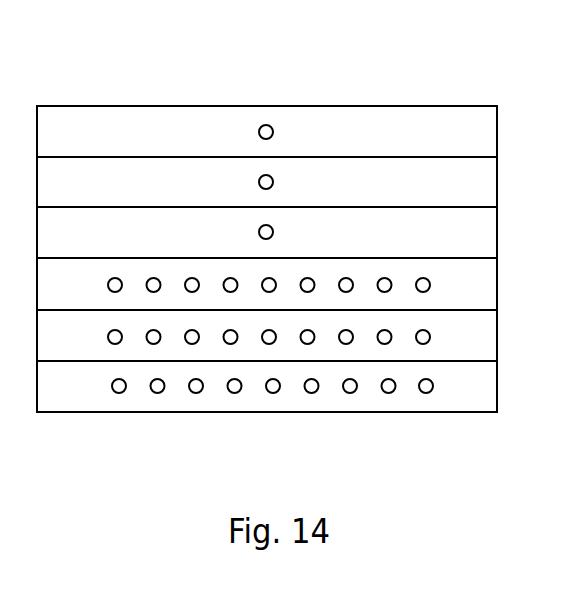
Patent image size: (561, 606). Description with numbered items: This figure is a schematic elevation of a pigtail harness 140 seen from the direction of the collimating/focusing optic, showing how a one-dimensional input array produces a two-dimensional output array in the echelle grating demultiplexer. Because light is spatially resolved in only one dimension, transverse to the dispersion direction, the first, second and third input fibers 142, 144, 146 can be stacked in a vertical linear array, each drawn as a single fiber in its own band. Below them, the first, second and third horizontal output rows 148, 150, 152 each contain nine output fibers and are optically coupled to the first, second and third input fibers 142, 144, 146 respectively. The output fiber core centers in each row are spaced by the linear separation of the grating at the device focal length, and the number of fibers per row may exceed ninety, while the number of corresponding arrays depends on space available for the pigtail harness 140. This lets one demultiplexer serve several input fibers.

The pigtail harness 140 is at (395, 74).
The first input fiber 142 is at (484, 233).
The second input fiber 144 is at (484, 178).
The third input fiber 146 is at (484, 123).
The first horizontal output row 148 is at (486, 284).
The second horizontal output row 150 is at (486, 336).
The third horizontal output row 152 is at (486, 388).